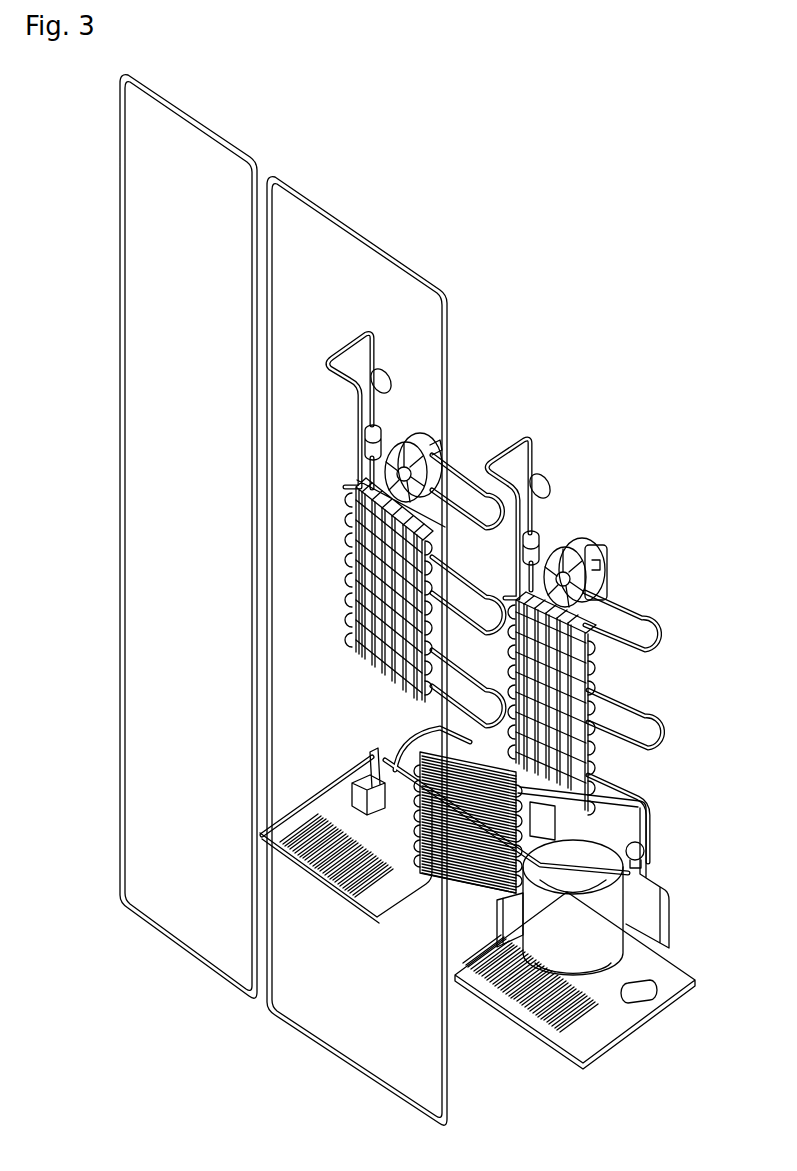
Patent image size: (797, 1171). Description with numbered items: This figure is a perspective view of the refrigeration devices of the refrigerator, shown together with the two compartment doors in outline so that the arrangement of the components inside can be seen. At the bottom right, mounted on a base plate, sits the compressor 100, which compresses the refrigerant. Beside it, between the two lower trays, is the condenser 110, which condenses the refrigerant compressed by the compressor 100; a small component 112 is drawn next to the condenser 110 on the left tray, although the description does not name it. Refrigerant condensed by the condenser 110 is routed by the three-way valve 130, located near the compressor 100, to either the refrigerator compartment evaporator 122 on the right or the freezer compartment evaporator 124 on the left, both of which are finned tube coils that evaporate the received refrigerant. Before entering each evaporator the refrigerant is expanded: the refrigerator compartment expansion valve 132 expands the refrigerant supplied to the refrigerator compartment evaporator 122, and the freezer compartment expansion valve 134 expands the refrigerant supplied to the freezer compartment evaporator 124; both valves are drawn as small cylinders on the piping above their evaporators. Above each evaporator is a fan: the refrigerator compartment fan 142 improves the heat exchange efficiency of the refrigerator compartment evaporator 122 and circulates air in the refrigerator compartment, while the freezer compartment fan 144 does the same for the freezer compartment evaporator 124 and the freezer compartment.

The compressor 100 is at (592, 954).
The condenser 110 is at (460, 880).
The condenser fan / dryer 112 is at (380, 770).
The refrigerator compartment evaporator 122 is at (598, 677).
The freezer compartment evaporator 124 is at (365, 550).
The 3-way valve 130 is at (645, 849).
The refrigerator compartment expansion valve 132 is at (537, 530).
The freezer compartment expansion valve 134 is at (365, 437).
The refrigerator compartment fan 142 is at (598, 557).
The freezer compartment fan 144 is at (437, 443).